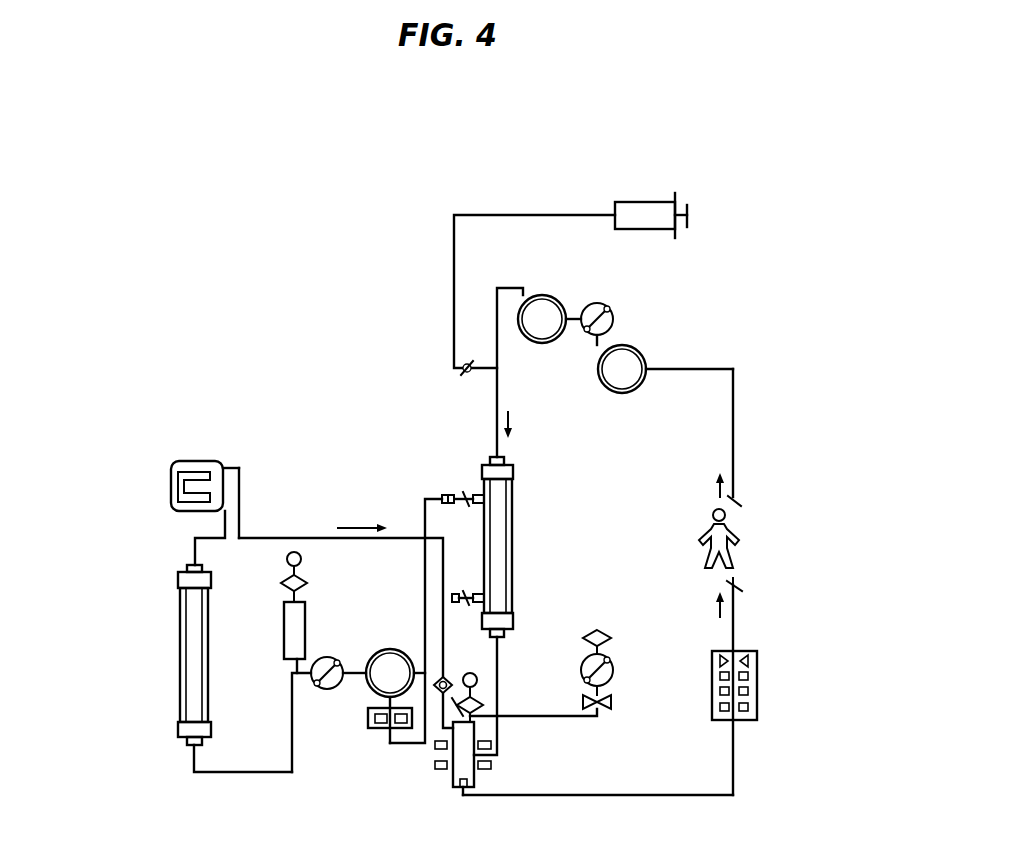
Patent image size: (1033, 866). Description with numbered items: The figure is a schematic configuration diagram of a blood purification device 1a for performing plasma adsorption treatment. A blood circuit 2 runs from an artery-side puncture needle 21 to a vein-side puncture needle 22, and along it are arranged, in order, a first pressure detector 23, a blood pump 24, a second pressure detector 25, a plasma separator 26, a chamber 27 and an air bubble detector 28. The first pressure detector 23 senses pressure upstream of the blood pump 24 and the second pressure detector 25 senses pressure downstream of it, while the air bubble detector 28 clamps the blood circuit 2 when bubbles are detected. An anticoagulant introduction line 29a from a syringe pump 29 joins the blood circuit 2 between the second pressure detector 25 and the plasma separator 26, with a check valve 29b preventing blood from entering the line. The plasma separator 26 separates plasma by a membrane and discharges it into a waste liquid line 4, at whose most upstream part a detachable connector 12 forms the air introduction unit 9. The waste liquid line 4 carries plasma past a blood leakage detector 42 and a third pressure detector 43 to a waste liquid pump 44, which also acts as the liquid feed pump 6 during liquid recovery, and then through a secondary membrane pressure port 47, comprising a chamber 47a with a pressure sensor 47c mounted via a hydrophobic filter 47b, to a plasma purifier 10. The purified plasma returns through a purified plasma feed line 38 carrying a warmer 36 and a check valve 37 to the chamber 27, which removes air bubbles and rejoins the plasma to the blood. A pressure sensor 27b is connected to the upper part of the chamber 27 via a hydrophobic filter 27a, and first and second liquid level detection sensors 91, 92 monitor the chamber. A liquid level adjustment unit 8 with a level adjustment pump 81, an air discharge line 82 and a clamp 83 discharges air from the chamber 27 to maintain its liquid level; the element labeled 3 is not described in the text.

The blood purification device 1a is at (258, 275).
The blood circuit 2 is at (706, 350).
The dialysis fluid supply device 3 is at (156, 488).
The waste liquid line 4 is at (186, 787).
The liquid feed pump 6 is at (318, 700).
The liquid level adjustment unit 8 is at (620, 655).
The air introduction unit 9 is at (424, 485).
The plasma purifier 10 is at (178, 643).
The connector 12 is at (442, 494).
The artery-side puncture needle 21 is at (738, 508).
The vein-side puncture needle 22 is at (738, 587).
The first pressure detector 23 is at (640, 353).
The blood pump 24 is at (608, 307).
The second pressure detector 25 is at (549, 297).
The plasma separator 26 is at (512, 465).
The chamber 27 is at (455, 787).
The hydrophobic filter 27a is at (486, 703).
The pressure sensor 27b is at (479, 678).
The air bubble detector 28 is at (712, 723).
The syringe pump 29 is at (635, 200).
The anticoagulant introduction line 29a is at (454, 262).
The check valve 29b is at (462, 373).
The warmer 36 is at (202, 461).
The check valve 37 is at (438, 678).
The purified plasma feed line 38 is at (172, 538).
The blood leakage detector 42 is at (368, 719).
The third pressure detector 43 is at (380, 652).
The waste liquid pump 44 is at (329, 657).
The secondary membrane pressure port 47 is at (266, 616).
The chamber 47a is at (284, 625).
The hydrophobic filter 47b is at (282, 582).
The pressure sensor 47c is at (287, 557).
The level adjustment pump 81 is at (613, 668).
The air discharge line 82 is at (585, 719).
The clamp 83 is at (611, 702).
The first liquid level detection sensor 91 is at (433, 772).
The second liquid level detection sensor 92 is at (433, 748).